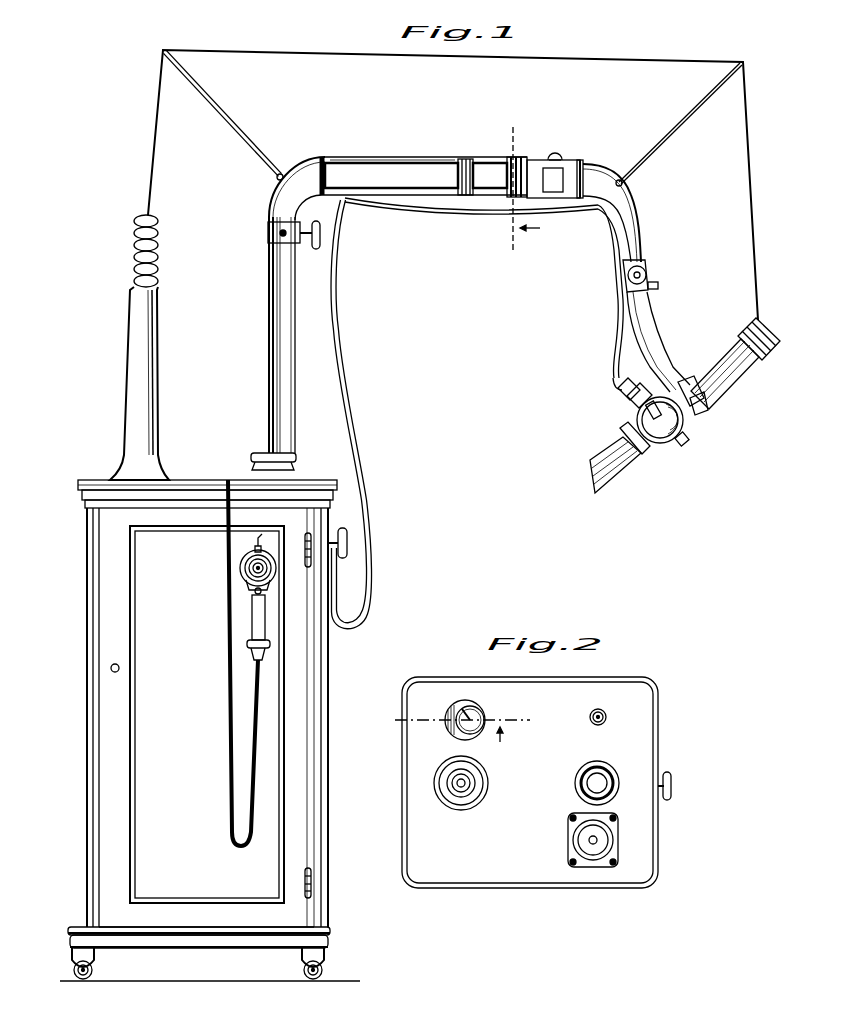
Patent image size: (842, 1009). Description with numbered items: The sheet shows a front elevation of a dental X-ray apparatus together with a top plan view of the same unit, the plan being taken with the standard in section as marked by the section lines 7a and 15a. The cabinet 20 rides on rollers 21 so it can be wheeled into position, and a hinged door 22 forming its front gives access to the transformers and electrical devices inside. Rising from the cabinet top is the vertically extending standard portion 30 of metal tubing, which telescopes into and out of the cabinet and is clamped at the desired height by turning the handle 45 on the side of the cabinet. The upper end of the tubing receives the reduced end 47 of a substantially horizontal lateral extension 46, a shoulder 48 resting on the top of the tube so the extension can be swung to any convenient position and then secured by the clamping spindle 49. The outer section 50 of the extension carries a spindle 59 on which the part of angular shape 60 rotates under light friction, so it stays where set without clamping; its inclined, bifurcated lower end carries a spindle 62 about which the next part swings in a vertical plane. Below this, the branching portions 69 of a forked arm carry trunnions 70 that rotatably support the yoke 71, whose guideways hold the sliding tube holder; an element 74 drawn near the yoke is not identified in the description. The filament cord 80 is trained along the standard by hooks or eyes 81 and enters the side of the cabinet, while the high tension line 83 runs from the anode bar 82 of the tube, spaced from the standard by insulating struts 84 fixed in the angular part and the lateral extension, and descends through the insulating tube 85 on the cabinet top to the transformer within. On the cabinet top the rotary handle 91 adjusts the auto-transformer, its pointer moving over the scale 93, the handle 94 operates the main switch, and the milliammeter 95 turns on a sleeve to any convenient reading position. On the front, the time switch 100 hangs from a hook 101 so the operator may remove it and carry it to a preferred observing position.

In FIG. 1, the section line 7a is at (519, 189).
In FIG. 2, the section line 15a is at (464, 726).
In FIG. 1, the cabinet 20 is at (211, 730).
In FIG. 2, the cabinet 20 is at (468, 888).
In FIG. 1, the rollers 21 is at (303, 968).
In FIG. 1, the hinged door 22 is at (270, 694).
In FIG. 1, the standard portion 30 is at (276, 305).
In FIG. 2, the standard portion 30 is at (606, 768).
In FIG. 1, the handle 45 is at (348, 542).
In FIG. 2, the handle 45 is at (673, 786).
In FIG. 1, the lateral extension 46 is at (416, 158).
In FIG. 1, the reduced end 47 is at (273, 292).
In FIG. 1, the shoulder 48 is at (266, 230).
In FIG. 1, the clamping spindle 49 is at (317, 250).
In FIG. 1, the section 50 is at (549, 160).
In FIG. 1, the spindle 59 is at (568, 162).
In FIG. 1, the part of angular shape 60 is at (640, 222).
In FIG. 1, the spindle 62 is at (648, 272).
In FIG. 1, the branching portions 69 is at (660, 326).
In FIG. 1, the trunnions 70 is at (706, 408).
In FIG. 1, the yoke 71 is at (690, 428).
In FIG. 1, the nozzle pipe 74 is at (716, 358).
In FIG. 1, the cord 80 is at (616, 300).
In FIG. 1, the hooks or eyes 81 is at (347, 206).
In FIG. 1, the anode bar 82 is at (752, 362).
In FIG. 1, the high tension line 83 is at (756, 260).
In FIG. 1, the struts 84 is at (252, 136).
In FIG. 1, the insulating tube 85 is at (158, 345).
In FIG. 2, the insulating tube 85 is at (488, 776).
In FIG. 1, the rotary handle 91 is at (253, 458).
In FIG. 2, the rotary handle 91 is at (596, 862).
In FIG. 2, the scale 93 is at (568, 830).
In FIG. 2, the handle 94 is at (606, 710).
In FIG. 2, the milliammeter 95 is at (463, 700).
In FIG. 1, the time switch 100 is at (252, 621).
In FIG. 1, the hook 101 is at (258, 543).